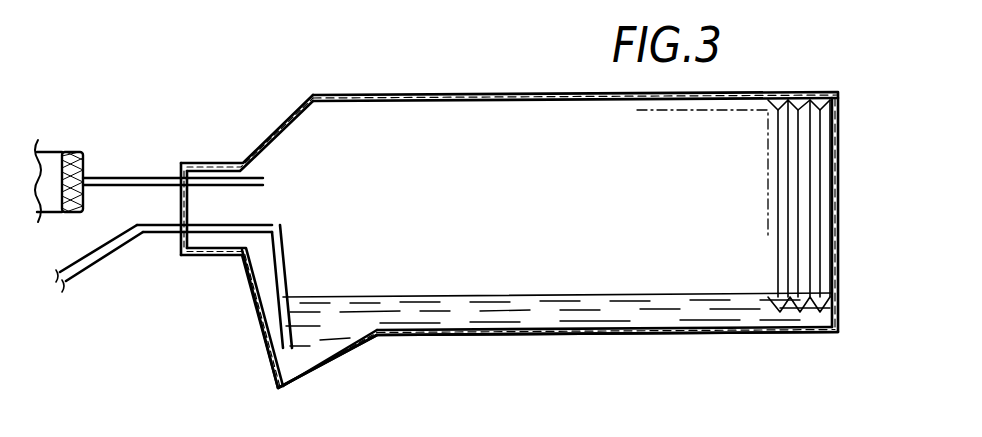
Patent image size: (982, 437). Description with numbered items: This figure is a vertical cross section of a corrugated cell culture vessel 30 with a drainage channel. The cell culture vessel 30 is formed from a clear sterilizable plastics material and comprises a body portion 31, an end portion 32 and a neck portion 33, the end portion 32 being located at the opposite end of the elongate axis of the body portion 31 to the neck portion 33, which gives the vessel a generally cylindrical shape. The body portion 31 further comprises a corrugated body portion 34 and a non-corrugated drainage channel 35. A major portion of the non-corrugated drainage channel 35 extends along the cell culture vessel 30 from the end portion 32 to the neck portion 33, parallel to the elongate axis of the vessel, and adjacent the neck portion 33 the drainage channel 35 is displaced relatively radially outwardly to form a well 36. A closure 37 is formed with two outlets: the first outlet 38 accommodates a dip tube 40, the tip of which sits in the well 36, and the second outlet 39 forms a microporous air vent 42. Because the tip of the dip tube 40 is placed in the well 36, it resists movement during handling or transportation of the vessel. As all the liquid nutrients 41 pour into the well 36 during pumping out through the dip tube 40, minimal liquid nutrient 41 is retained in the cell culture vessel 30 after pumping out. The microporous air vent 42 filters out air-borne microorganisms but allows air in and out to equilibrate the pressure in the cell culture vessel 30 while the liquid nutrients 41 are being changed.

The cell culture vessel 30 is at (533, 343).
The body portion 31 is at (480, 95).
The end portion 32 is at (840, 128).
The neck portion 33 is at (242, 270).
The corrugated body portion 34 is at (802, 115).
The non-corrugated drainage channel 35 is at (800, 318).
The well 36 is at (310, 353).
The closure 37 is at (207, 162).
The first outlet 38 is at (173, 240).
The second outlet 39 is at (175, 173).
The dip tube 40 is at (277, 348).
The liquid nutrients 41 is at (637, 313).
The microporous air vent 42 is at (120, 177).